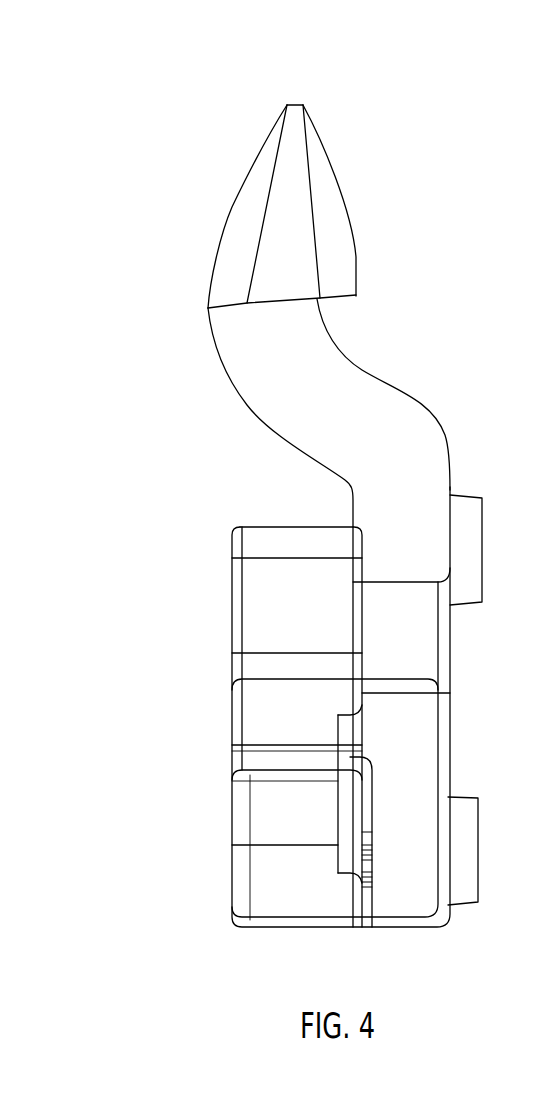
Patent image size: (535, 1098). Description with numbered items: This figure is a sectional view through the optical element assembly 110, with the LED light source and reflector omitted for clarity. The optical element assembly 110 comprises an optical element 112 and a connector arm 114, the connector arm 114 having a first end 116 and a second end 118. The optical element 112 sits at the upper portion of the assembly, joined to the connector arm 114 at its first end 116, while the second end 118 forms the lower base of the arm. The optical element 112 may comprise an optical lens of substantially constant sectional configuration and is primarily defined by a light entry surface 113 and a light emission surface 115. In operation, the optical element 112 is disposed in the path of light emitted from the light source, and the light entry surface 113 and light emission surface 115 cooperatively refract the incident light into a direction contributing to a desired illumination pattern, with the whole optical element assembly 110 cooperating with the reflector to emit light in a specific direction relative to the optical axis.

The optical element assembly 110 is at (115, 54).
The optical element 112 is at (330, 135).
The light entry surface 113 is at (356, 235).
The connector arm 114 is at (186, 530).
The light emission surface 115 is at (232, 207).
The first end 116 is at (186, 328).
The second end 118 is at (156, 883).